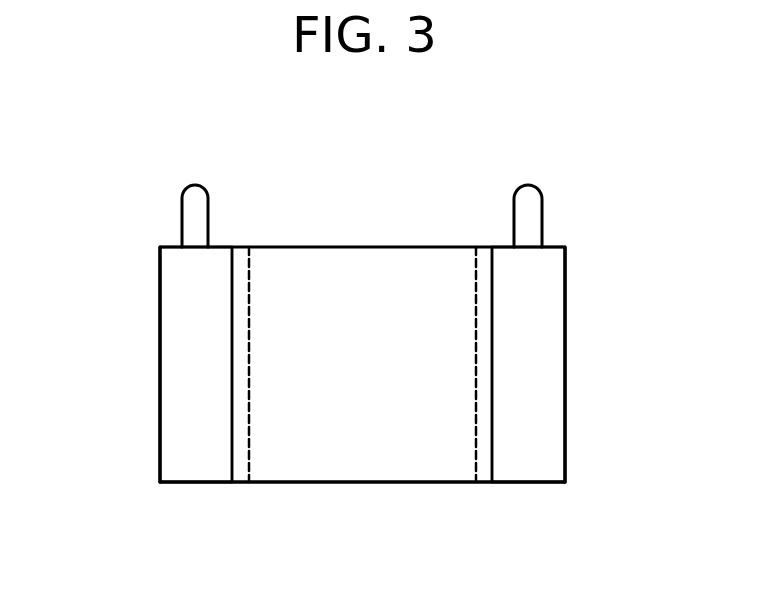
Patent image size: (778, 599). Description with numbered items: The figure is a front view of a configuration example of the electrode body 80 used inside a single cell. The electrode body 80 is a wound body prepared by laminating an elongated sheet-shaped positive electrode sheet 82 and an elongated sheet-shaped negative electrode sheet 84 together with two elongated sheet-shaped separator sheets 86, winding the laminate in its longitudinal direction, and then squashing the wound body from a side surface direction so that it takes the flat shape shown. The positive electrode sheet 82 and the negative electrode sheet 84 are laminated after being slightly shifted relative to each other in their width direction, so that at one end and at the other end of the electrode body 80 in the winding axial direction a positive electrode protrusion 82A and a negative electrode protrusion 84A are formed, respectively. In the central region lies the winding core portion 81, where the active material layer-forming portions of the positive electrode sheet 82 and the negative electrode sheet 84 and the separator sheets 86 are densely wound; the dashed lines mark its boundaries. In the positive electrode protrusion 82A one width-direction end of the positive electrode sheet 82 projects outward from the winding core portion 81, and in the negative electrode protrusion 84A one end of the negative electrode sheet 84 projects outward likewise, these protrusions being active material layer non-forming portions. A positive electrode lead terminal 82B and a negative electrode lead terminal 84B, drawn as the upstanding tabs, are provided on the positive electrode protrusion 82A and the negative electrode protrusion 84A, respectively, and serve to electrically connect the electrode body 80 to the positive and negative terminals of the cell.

The electrode body 80 is at (450, 235).
The winding core portion 81 is at (360, 467).
The positive electrode sheet 82 is at (565, 322).
The positive electrode protrusion 82A is at (538, 433).
The positive electrode lead terminal 82B is at (542, 207).
The negative electrode sheet 84 is at (158, 323).
The negative electrode protrusion 84A is at (172, 415).
The negative electrode lead terminal 84B is at (209, 207).
The separator sheets 86 is at (289, 257).